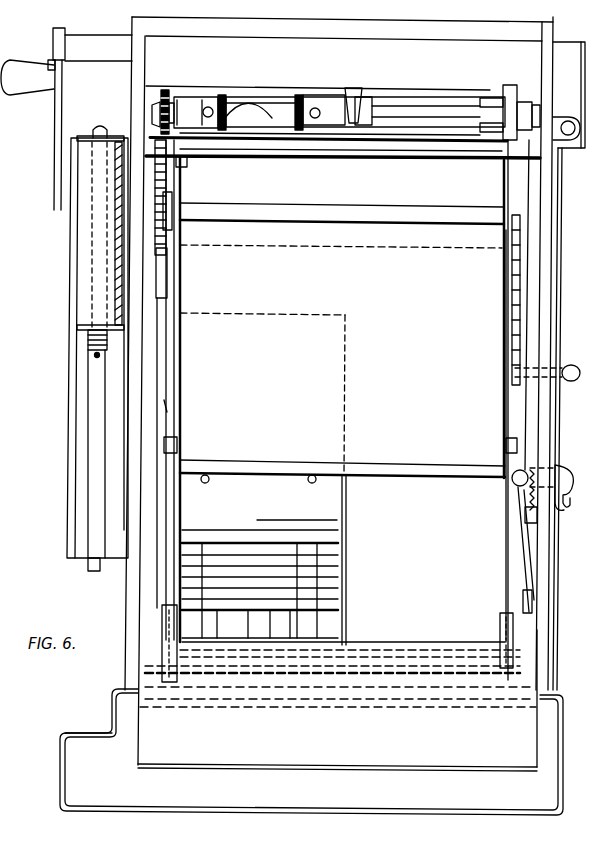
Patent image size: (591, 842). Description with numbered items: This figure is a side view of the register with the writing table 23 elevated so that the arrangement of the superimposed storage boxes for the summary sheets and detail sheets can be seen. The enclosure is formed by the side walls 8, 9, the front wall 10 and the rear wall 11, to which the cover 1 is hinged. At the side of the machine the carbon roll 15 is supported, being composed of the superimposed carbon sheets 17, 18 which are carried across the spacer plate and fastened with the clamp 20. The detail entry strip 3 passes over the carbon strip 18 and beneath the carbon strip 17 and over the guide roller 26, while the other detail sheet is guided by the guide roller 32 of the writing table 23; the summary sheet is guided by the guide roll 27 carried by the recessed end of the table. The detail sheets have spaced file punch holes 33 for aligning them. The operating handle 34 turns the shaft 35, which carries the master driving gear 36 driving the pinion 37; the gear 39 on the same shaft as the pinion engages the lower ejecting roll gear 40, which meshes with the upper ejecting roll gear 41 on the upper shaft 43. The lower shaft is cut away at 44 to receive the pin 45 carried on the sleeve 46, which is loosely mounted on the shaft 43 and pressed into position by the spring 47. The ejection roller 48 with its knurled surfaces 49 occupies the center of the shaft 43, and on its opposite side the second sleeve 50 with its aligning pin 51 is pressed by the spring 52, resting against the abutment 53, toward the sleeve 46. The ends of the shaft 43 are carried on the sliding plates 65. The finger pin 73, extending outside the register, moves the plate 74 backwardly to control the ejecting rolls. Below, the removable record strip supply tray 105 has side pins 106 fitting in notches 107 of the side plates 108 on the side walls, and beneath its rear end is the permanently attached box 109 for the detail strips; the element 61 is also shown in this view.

The cover 1 is at (100, 747).
The detail entry strip 3 is at (330, 578).
The side wall 8 is at (135, 33).
The side wall 9 is at (540, 37).
The front wall 10 is at (372, 30).
The rear wall 11 is at (275, 712).
The carbon roll 15 is at (82, 270).
The carbon sheet 17 is at (115, 290).
The carbon sheet 18 is at (115, 306).
The clamp 20 is at (558, 300).
The writing table 23 is at (315, 768).
The guide roller 26 is at (404, 650).
The guide roll 27 is at (466, 655).
The guide roller 32 is at (432, 652).
The file punch holes 33 is at (318, 482).
The operating handle 34 is at (56, 158).
The shaft 35 is at (375, 210).
The master driving gear 36 is at (182, 238).
The pinion 37 is at (172, 178).
The gear 39 is at (188, 165).
The lower ejecting roll gear 40 is at (165, 100).
The upper ejecting roll gear 41 is at (176, 110).
The upper ejecting roll shaft 43 is at (438, 108).
The cut away portion 44 is at (209, 97).
The pin 45 is at (209, 107).
The sleeve 46 is at (248, 114).
The spring 47 is at (196, 112).
The ejection roller 48 is at (282, 88).
The knurled surfaces 49 is at (295, 118).
The second sleeve 50 is at (332, 100).
The aligning pin 51 is at (313, 107).
The spring 52 is at (352, 140).
The abutment 53 is at (370, 105).
The wedge 61 is at (356, 92).
The sliding plate 65 is at (150, 108).
The finger pin 73 is at (568, 366).
The plate 74 is at (520, 345).
The record strip supply tray 105 is at (458, 136).
The side pins 106 is at (178, 443).
The notches 107 is at (181, 432).
The side plates 108 is at (165, 408).
The box for the detail strips 109 is at (350, 492).